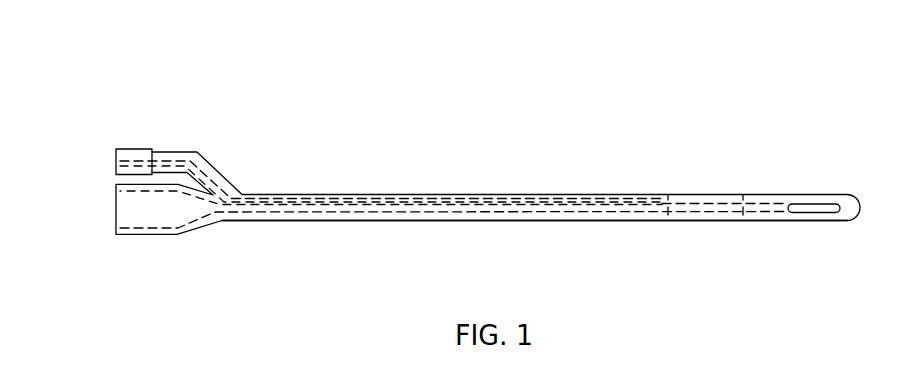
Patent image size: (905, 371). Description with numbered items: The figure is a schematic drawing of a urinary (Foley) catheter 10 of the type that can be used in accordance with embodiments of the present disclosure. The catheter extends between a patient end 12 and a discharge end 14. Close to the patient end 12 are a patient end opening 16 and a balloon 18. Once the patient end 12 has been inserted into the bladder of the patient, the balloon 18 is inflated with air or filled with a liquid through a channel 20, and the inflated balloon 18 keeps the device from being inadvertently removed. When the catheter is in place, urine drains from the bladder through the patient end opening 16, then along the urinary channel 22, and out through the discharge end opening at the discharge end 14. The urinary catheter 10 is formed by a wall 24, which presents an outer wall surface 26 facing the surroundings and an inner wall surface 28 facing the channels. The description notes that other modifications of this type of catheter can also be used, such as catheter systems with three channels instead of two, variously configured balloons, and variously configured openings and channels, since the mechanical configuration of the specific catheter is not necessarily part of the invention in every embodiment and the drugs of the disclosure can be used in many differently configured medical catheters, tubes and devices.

The urinary catheter 10 is at (343, 93).
The patient end 12 is at (860, 157).
The discharge end 14 is at (147, 120).
The patient end opening 16 is at (815, 194).
The balloon 18 is at (714, 220).
The channel 20 is at (450, 194).
The urinary channel 22 is at (527, 212).
The wall 24 is at (567, 194).
The outer wall surface 26 is at (623, 193).
The inner wall surface 28 is at (652, 201).